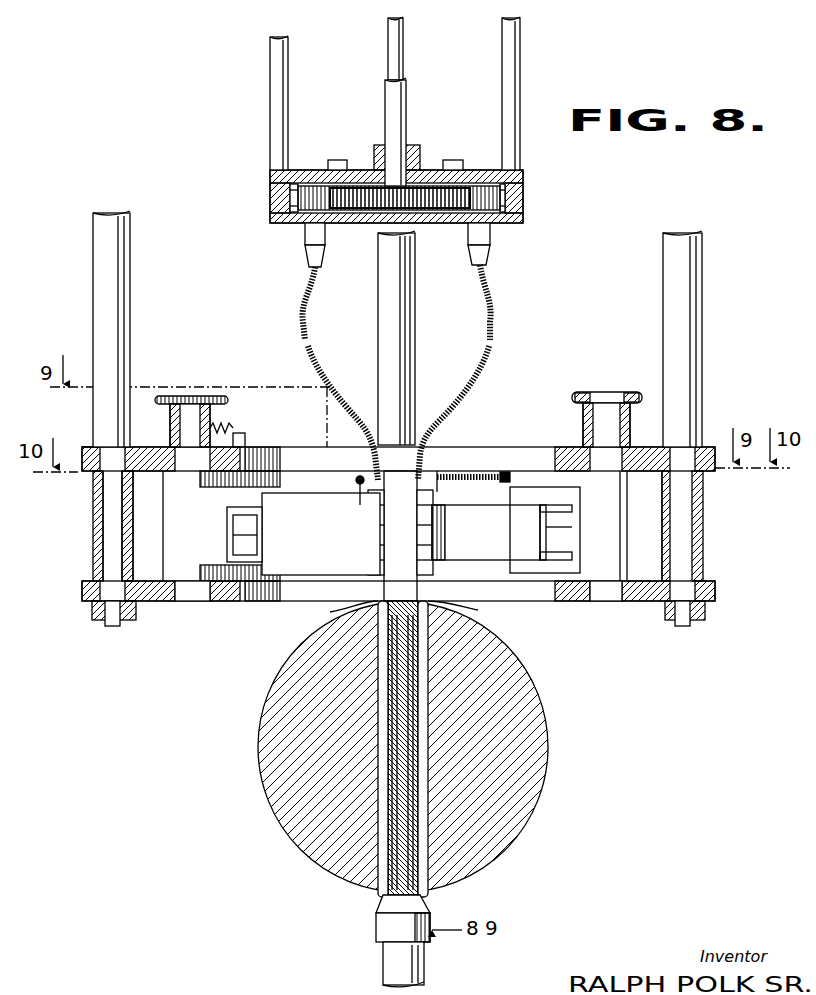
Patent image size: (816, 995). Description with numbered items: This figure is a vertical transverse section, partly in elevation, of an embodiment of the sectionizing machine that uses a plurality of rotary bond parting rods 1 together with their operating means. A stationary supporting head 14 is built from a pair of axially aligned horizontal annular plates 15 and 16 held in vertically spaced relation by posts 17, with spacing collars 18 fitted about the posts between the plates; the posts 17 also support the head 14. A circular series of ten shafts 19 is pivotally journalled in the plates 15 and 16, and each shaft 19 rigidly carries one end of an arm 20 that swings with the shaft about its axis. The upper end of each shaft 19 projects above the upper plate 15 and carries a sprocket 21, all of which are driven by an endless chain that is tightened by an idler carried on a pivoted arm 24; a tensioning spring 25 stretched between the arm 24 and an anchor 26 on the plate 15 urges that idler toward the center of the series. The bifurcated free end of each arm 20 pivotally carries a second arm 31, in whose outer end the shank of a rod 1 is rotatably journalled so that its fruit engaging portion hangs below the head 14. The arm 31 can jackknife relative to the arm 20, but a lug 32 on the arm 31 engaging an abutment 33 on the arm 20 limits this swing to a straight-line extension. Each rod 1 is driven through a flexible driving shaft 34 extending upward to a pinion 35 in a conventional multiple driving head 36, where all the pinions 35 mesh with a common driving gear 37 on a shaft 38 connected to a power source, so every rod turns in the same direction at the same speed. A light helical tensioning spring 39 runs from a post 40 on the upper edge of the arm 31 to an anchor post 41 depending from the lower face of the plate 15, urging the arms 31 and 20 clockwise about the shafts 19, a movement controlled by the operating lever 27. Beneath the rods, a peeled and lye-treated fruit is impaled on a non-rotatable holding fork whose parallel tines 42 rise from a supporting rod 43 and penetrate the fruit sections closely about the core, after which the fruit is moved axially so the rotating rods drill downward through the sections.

The bond parting rod 1 is at (383, 533).
The supporting head 14 is at (95, 493).
The upper annular plate 15 is at (86, 450).
The lower annular plate 16 is at (85, 601).
The post 17 is at (115, 335).
The spacing collar 18 is at (97, 545).
The shaft 19 is at (188, 600).
The arm 20 is at (172, 537).
The sprocket 21 is at (226, 400).
The arm 24 is at (175, 443).
The tensioning spring 25 is at (243, 425).
The anchor 26 is at (240, 432).
The operating lever 27 is at (378, 757).
The second arm 31 is at (326, 517).
The lug 32 is at (250, 520).
The abutment 33 is at (232, 537).
The flexible driving shaft 34 is at (336, 384).
The pinion 35 is at (298, 197).
The multiple driving head 36 is at (275, 215).
The driving gear 37 is at (432, 168).
The shaft 38 is at (398, 112).
The helical tensioning spring 39 is at (470, 470).
The post 40 is at (440, 490).
The anchor post 41 is at (504, 474).
The tine 42 is at (393, 798).
The supporting rod 43 is at (383, 957).